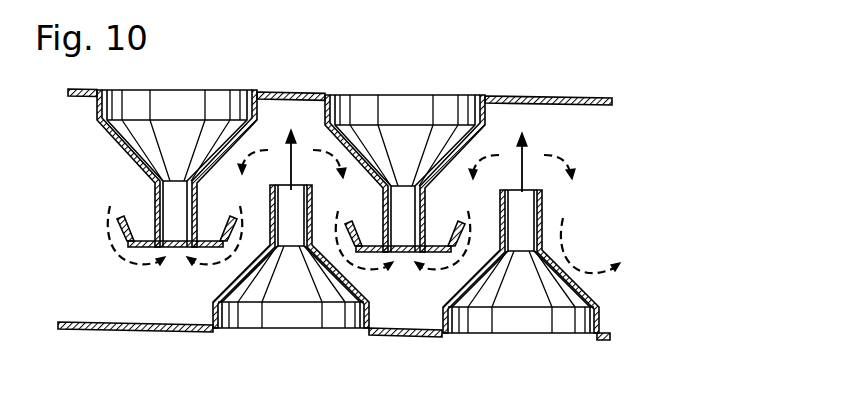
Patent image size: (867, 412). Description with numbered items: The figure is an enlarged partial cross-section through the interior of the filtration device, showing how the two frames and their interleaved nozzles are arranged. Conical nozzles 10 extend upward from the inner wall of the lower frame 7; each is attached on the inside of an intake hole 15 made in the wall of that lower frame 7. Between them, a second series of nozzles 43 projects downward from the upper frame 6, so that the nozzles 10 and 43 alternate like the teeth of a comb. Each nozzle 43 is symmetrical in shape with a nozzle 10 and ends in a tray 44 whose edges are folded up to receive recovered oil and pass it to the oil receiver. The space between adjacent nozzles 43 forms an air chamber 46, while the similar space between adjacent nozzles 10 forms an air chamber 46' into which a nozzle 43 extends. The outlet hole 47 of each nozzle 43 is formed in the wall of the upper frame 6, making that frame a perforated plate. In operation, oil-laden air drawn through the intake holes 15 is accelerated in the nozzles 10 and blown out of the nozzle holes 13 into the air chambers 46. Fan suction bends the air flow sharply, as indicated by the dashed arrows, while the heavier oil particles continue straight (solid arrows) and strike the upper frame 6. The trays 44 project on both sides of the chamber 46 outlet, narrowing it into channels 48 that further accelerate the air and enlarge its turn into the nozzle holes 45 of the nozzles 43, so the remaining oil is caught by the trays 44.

The upper frame 6 is at (528, 97).
The lower frame 7 is at (403, 336).
The conical nozzle 10 is at (360, 287).
The nozzle hole 13 is at (300, 188).
The intake hole 15 is at (290, 330).
The nozzle 43 is at (108, 137).
The tray 44 is at (128, 235).
The nozzle hole 45 is at (174, 248).
The air chamber 46 is at (406, 88).
The air chamber 46' is at (272, 345).
The outlet hole 47 is at (180, 97).
The channel 48 is at (243, 217).